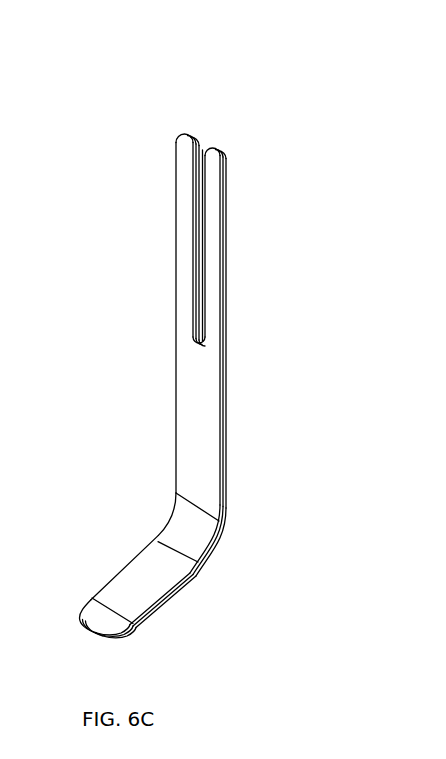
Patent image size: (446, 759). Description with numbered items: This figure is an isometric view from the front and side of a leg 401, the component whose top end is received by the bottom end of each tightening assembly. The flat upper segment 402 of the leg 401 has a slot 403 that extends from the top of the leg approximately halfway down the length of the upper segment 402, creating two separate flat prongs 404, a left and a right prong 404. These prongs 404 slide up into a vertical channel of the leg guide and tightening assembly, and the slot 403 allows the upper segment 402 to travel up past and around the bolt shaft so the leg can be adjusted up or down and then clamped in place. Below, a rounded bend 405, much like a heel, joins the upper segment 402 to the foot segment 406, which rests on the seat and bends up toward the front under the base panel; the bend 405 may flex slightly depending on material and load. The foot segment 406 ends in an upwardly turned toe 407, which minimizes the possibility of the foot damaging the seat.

The leg 401 is at (137, 243).
The upper segment 402 is at (247, 143).
The slot 403 is at (207, 142).
The prongs 404 is at (185, 155).
The rounded bend 405 is at (200, 535).
The foot segment 406 is at (157, 588).
The toe 407 is at (113, 621).